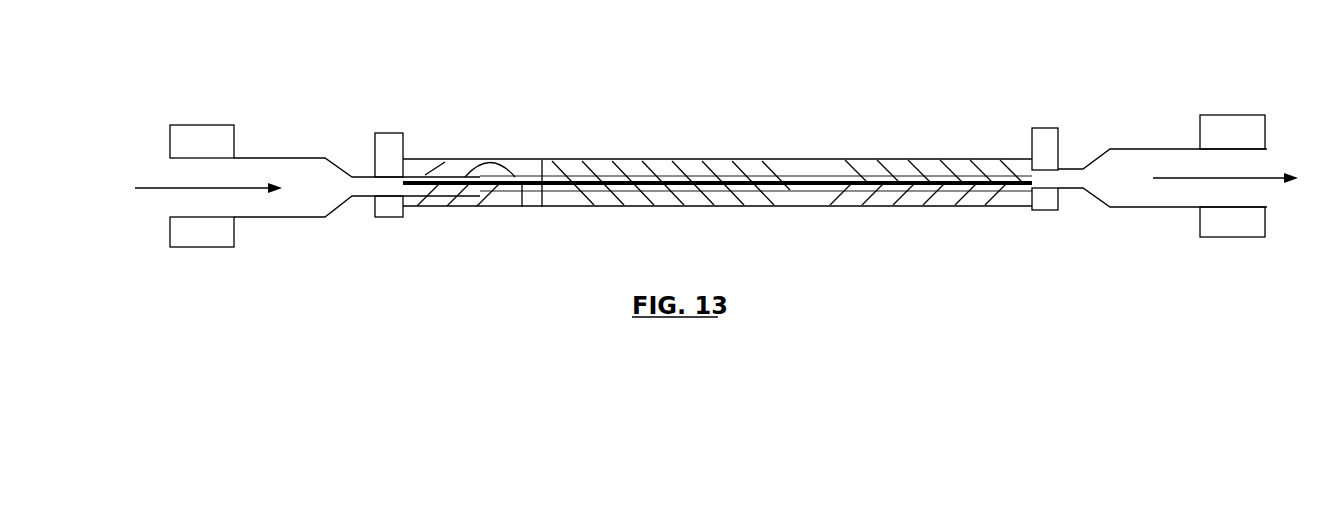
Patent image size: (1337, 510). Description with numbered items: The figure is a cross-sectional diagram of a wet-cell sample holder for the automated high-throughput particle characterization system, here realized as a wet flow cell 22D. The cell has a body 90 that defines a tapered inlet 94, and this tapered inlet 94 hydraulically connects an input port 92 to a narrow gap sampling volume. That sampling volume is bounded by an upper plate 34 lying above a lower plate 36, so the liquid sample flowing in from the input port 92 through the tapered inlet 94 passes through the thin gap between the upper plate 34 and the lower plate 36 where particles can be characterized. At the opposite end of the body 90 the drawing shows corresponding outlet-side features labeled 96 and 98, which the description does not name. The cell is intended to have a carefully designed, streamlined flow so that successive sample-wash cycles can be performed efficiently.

The input port 92 is at (185, 126).
The tapered inlet 94 is at (430, 180).
The wet flow cell 22D is at (482, 205).
The body 90 is at (898, 205).
The upper plate 34 is at (695, 182).
The lower plate 36 is at (717, 183).
The outlet flange 96 is at (953, 173).
The outlet connector 98 is at (1248, 115).